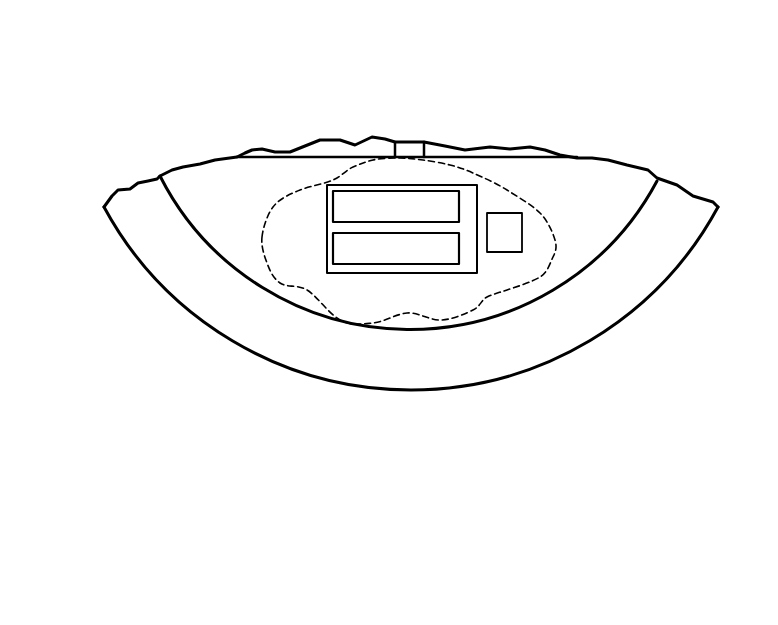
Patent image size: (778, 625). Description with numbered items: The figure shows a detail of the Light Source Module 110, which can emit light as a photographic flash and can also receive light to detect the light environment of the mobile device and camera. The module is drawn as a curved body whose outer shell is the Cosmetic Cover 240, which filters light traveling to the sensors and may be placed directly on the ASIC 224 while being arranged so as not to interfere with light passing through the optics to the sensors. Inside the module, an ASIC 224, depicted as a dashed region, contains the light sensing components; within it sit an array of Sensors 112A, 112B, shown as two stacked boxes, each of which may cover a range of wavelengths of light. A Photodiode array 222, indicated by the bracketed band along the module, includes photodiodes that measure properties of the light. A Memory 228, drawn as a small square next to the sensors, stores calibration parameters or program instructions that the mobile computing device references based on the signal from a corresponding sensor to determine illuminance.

The light source module 110 is at (243, 317).
The sensor 112A is at (455, 218).
The sensor 112B is at (455, 259).
The photodiode array 222 is at (125, 285).
The ASIC 224 is at (465, 290).
The memory 228 is at (508, 228).
The cosmetic cover 240 is at (552, 243).